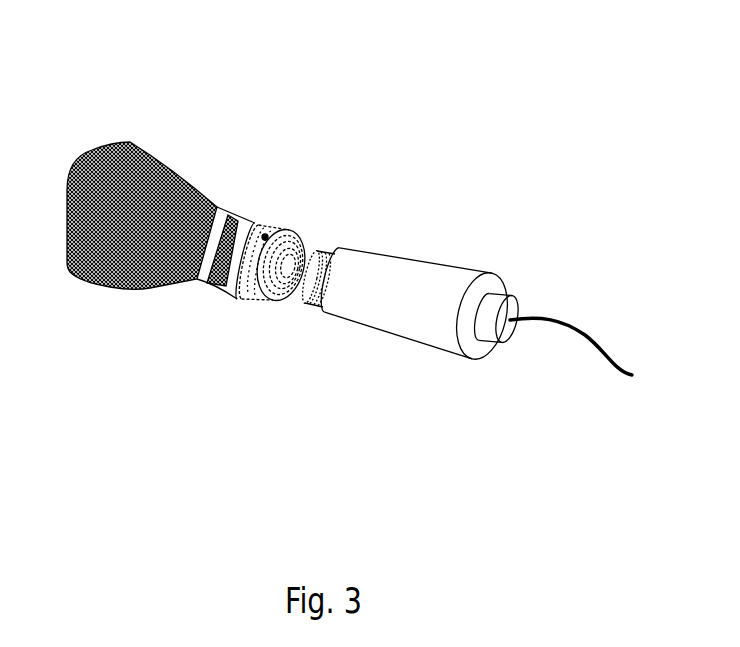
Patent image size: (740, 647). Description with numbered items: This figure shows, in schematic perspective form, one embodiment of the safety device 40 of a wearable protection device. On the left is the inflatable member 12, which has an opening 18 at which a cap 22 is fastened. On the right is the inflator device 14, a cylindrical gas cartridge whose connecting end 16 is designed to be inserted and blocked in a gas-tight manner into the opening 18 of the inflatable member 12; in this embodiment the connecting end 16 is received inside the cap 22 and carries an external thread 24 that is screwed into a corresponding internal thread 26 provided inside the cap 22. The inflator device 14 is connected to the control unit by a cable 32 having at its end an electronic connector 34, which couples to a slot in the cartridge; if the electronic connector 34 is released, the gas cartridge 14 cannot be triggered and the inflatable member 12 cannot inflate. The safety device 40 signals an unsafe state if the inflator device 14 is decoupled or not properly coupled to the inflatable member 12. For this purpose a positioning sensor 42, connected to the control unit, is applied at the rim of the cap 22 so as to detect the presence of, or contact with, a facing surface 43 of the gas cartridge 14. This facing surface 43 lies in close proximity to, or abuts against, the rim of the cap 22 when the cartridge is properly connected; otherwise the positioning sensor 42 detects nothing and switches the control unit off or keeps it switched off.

The inflatable member 12 is at (85, 105).
The inflator device 14 is at (465, 233).
The connecting end 16 is at (324, 242).
The opening 18 is at (223, 198).
The cap 22 is at (258, 302).
The external thread 24 is at (309, 290).
The internal thread 26 is at (290, 247).
The cable 32 is at (634, 358).
The electronic connector 34 is at (512, 308).
The safety device 40 is at (257, 246).
The positioning sensor 42 is at (266, 235).
The facing surface 43 is at (338, 246).